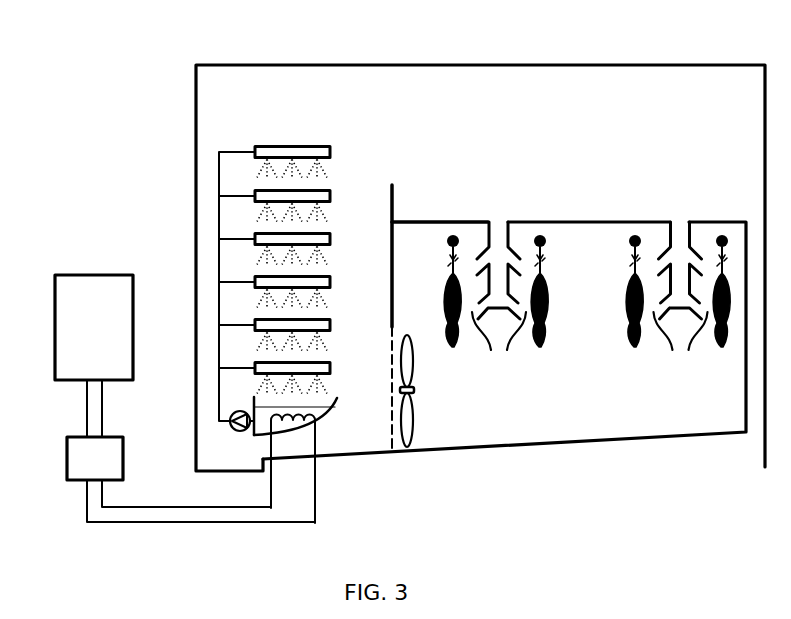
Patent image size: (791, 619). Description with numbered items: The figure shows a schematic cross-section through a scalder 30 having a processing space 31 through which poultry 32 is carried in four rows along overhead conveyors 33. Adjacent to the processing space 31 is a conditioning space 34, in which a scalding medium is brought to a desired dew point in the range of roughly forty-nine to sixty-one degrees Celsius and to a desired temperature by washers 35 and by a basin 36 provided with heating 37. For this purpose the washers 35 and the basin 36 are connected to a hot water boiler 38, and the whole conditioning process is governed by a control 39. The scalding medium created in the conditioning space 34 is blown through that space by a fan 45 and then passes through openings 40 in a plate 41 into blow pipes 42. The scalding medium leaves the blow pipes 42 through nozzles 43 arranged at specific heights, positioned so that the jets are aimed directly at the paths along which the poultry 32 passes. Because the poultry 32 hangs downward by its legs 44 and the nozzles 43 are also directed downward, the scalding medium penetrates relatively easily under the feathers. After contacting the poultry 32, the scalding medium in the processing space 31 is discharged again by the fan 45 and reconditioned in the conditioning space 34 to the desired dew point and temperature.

The scalder 30 is at (125, 68).
The processing space 31 is at (595, 396).
The poultry 32 is at (444, 305).
The overhead conveyor 33 is at (541, 234).
The conditioning space 34 is at (296, 285).
The washer 35 is at (330, 153).
The basin 36 is at (326, 414).
The heating 37 is at (318, 410).
The hot water boiler 38 is at (108, 342).
The control 39 is at (108, 471).
The opening 40 is at (497, 215).
The plate 41 is at (418, 220).
The blow pipe 42 is at (485, 232).
The nozzle 43 is at (590, 342).
The leg 44 is at (449, 262).
The fan 45 is at (412, 421).